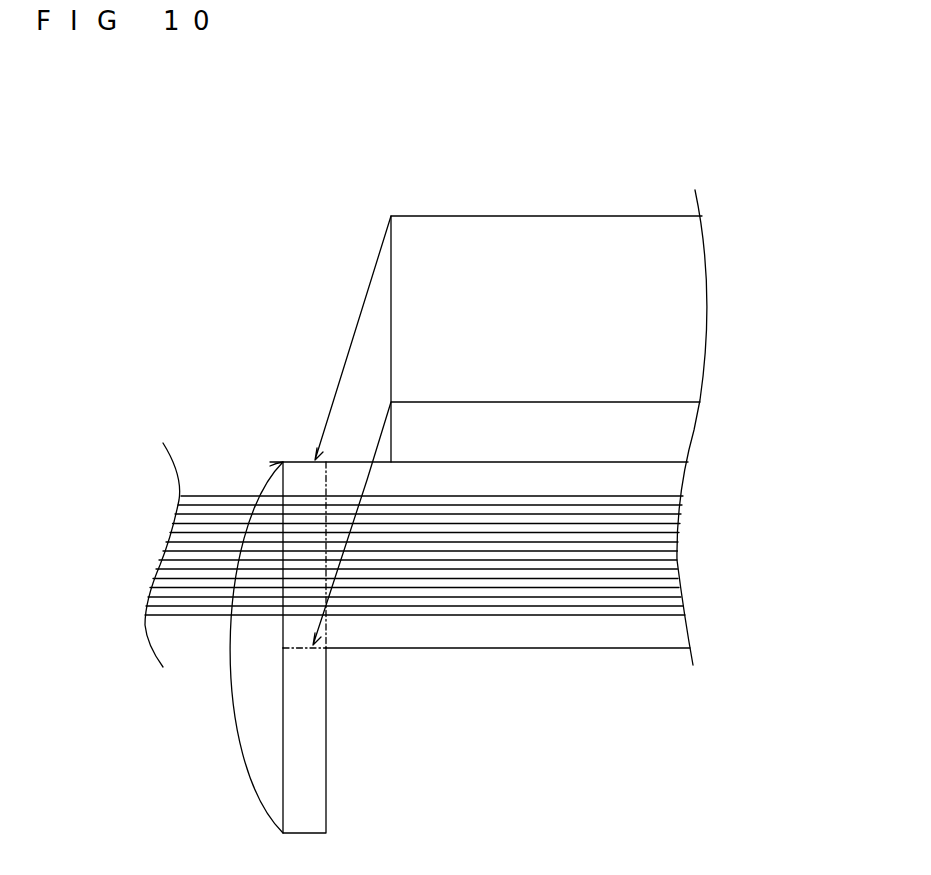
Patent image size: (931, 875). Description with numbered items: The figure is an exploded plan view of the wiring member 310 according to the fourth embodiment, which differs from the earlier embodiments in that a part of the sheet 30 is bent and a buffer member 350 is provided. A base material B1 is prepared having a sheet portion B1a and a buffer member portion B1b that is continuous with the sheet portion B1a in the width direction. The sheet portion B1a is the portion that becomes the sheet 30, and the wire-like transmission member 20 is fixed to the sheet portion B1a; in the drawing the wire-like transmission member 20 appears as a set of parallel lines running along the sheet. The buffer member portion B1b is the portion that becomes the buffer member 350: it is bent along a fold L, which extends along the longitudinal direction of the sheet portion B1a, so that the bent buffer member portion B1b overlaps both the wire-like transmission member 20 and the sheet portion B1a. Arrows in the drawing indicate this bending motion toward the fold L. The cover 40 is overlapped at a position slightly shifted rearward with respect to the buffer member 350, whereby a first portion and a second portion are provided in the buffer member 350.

The wiring member 310 is at (190, 155).
The cover 40 is at (548, 232).
The sheet 30 is at (563, 637).
The wire-like transmission member 20 is at (198, 592).
The buffer member 350 is at (322, 480).
The base material B1 is at (421, 672).
The sheet portion B1a is at (360, 637).
The buffer member portion B1b is at (310, 720).
The fold L is at (312, 647).